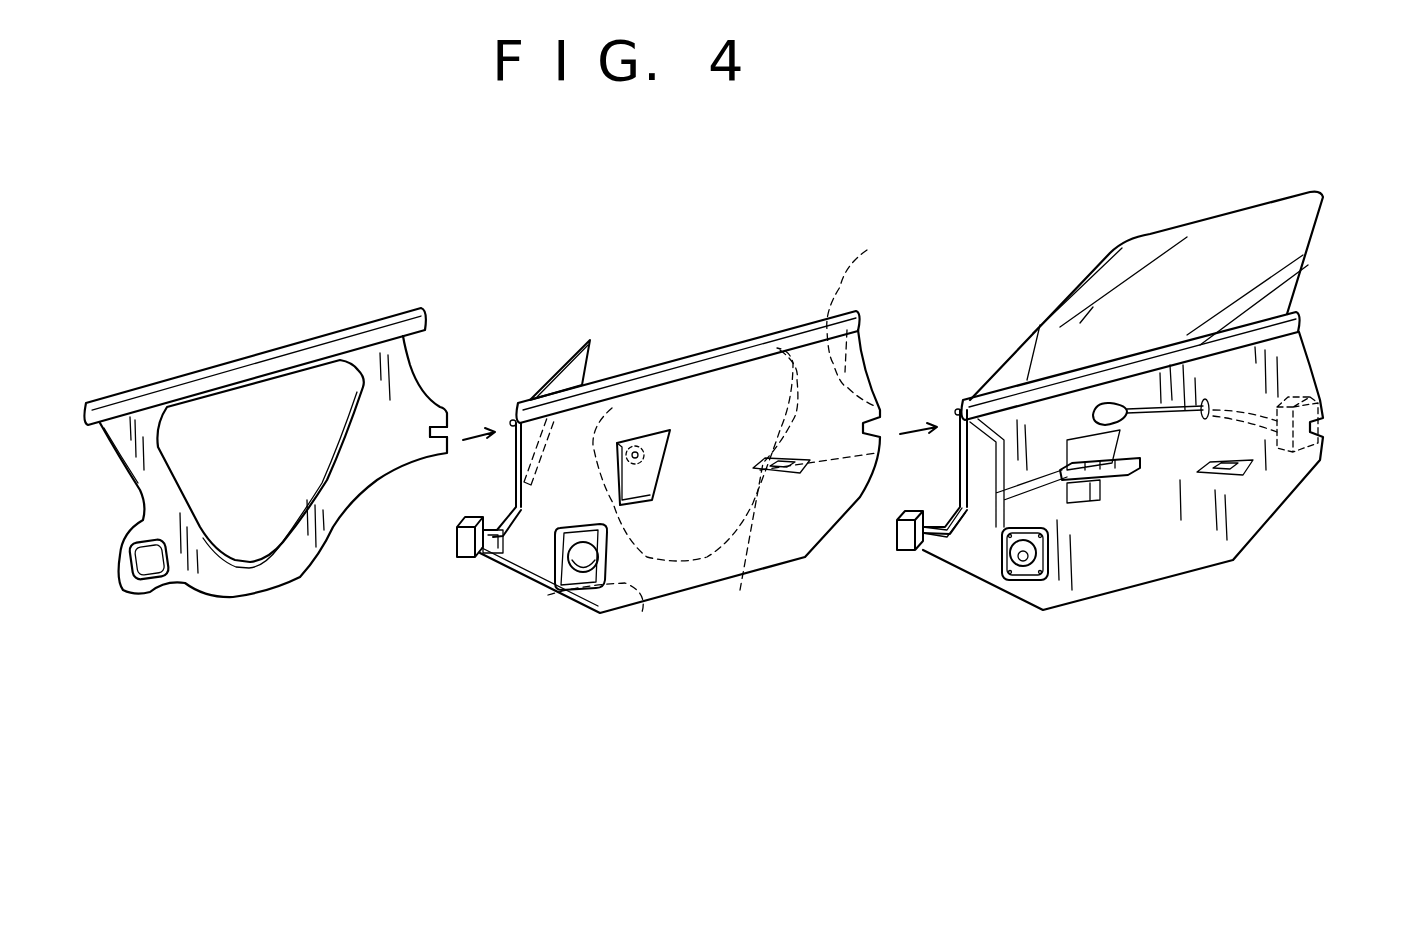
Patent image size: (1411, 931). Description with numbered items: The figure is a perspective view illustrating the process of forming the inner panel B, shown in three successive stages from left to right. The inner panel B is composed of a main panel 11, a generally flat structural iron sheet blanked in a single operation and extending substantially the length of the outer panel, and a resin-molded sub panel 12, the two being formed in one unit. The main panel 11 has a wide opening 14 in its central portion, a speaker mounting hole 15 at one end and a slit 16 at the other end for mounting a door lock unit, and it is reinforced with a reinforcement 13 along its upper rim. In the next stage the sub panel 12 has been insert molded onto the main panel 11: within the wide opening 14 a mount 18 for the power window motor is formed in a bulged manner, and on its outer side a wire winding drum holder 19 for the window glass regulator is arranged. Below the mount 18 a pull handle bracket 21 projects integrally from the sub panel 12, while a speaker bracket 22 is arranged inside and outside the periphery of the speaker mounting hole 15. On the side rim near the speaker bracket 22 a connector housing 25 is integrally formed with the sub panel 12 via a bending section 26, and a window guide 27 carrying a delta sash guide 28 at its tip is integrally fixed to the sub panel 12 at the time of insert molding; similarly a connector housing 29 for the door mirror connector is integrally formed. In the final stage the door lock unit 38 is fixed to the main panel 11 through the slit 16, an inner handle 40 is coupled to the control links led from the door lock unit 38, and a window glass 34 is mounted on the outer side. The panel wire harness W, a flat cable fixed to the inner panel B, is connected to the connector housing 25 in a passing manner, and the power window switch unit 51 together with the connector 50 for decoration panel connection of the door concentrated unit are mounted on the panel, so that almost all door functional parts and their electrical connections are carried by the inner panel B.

The main panel 11 is at (415, 380).
The sub panel 12 is at (860, 330).
The reinforcement 13 is at (227, 363).
The wide opening 14 is at (270, 520).
The speaker mounting hole 15 is at (150, 563).
The slit 16 is at (430, 420).
The mount 18 is at (660, 450).
The wire winding drum holder 19 is at (640, 462).
The pull handle bracket 21 is at (757, 493).
The speaker bracket 22 is at (562, 572).
The connector housing 25 is at (457, 540).
The bending section 26 is at (492, 533).
The window guide 27 is at (513, 455).
The delta sash guide 28 is at (557, 363).
The connector housing 29 is at (953, 417).
The window glass 34 is at (1160, 232).
The door lock unit 38 is at (1313, 385).
The inner handle 40 is at (1095, 405).
The connector 50 is at (1093, 503).
The power window switch unit 51 is at (1130, 487).
The inner panel B is at (905, 245).
The panel wire harness W is at (970, 533).